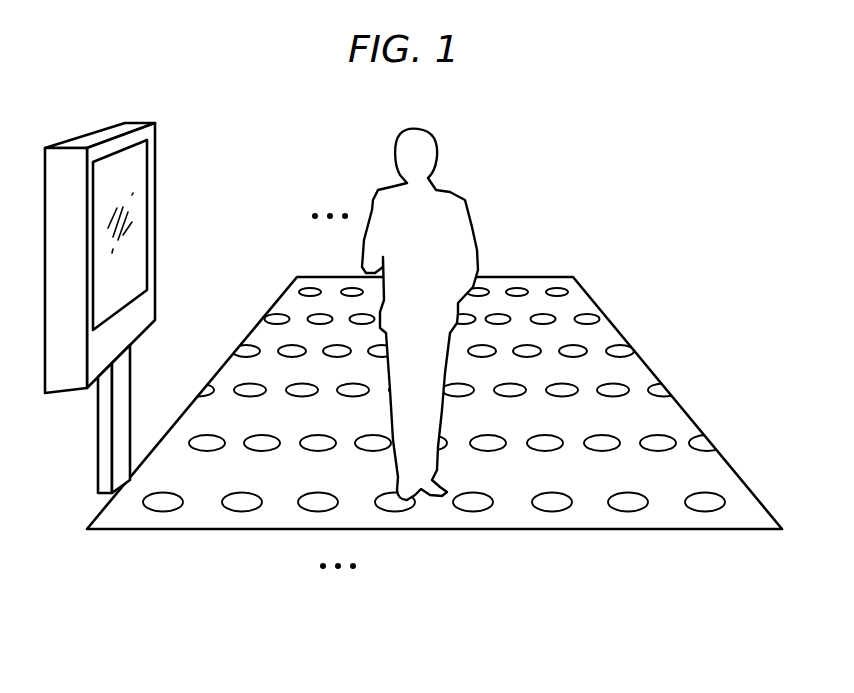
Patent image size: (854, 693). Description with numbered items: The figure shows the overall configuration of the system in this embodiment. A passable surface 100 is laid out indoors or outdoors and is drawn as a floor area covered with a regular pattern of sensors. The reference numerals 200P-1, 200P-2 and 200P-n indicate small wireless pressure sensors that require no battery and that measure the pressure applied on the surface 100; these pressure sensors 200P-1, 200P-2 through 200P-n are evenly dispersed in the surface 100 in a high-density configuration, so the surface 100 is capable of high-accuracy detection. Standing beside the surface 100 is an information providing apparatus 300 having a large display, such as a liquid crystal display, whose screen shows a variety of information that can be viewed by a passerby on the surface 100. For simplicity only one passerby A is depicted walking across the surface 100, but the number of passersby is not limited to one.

The passable surface 100 is at (650, 370).
The pressure sensor 200P-1 is at (170, 503).
The pressure sensor 200P-2 is at (248, 503).
The pressure sensor 200P-n is at (308, 290).
The information providing apparatus 300 is at (157, 137).
The passerby A is at (437, 140).